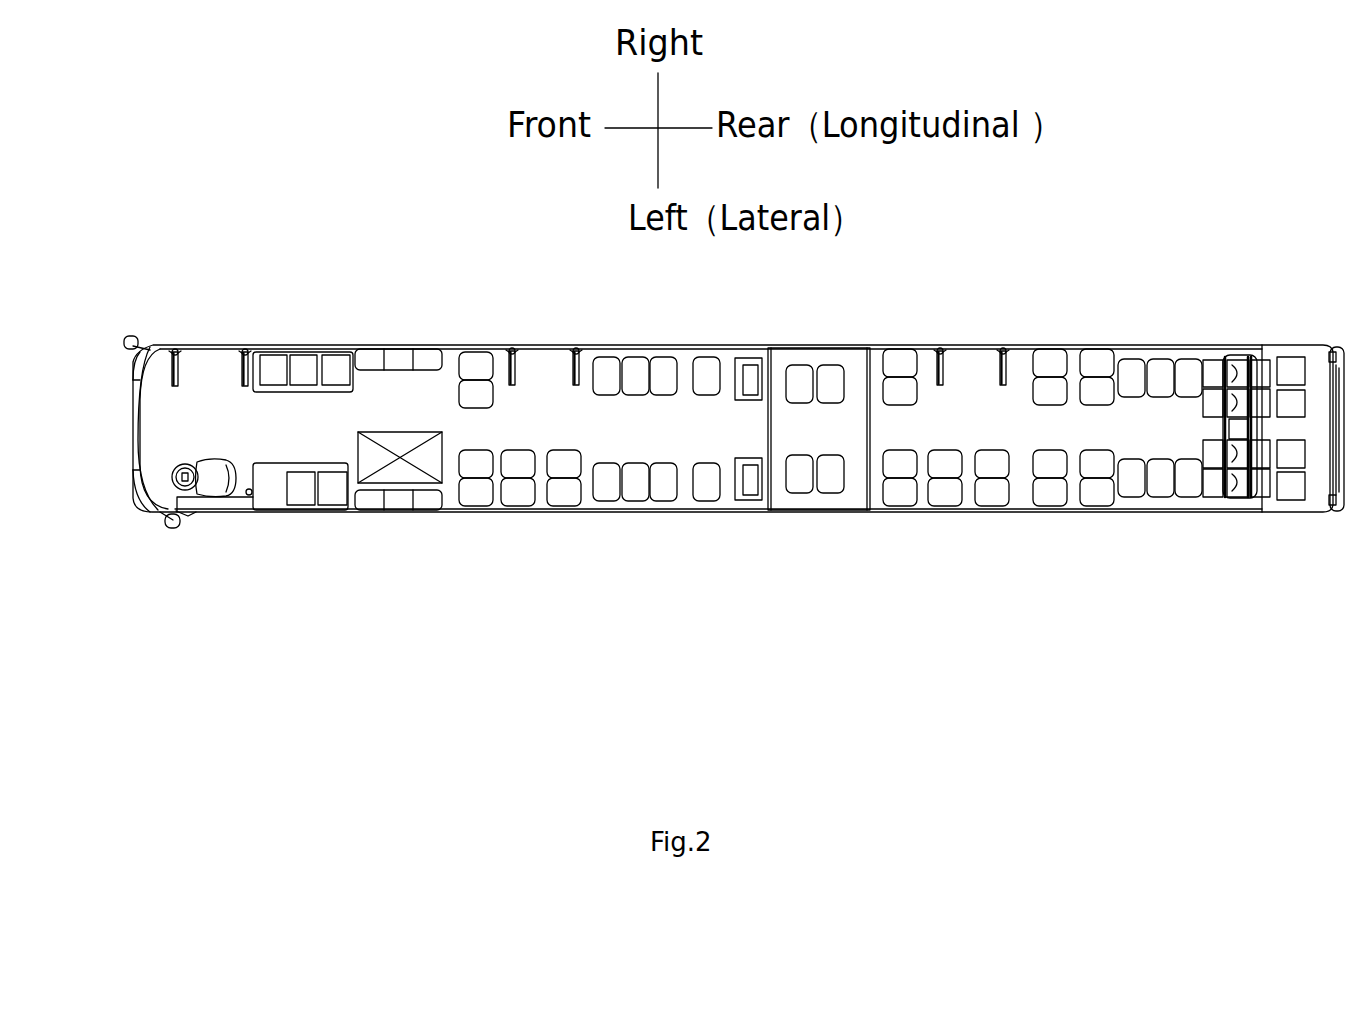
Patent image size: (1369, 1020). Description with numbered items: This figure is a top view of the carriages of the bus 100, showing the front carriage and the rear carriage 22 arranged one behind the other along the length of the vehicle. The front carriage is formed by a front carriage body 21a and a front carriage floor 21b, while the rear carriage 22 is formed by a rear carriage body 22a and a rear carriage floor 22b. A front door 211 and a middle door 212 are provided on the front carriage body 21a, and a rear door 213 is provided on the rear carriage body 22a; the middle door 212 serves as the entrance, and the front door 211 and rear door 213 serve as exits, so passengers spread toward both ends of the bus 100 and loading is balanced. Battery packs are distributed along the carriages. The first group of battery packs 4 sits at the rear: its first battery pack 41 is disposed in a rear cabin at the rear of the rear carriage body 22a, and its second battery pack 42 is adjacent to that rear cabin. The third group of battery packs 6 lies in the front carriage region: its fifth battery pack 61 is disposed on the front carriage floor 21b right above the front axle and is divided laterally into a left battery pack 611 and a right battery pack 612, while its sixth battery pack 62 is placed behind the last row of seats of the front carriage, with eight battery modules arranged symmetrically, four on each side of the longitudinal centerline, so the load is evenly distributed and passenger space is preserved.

The bus 100 is at (360, 230).
The front door 211 is at (250, 347).
The front carriage body 21a is at (398, 347).
The middle door 212 is at (515, 347).
The rear door 213 is at (948, 347).
The rear carriage 22 is at (705, 415).
The rear carriage body 22a is at (1082, 347).
The rear carriage floor 22b is at (1008, 437).
The front carriage floor 21b is at (177, 448).
The first group of battery packs 4 is at (1225, 203).
The first battery pack 41 is at (1287, 345).
The second battery pack 42 is at (1210, 345).
The third group of battery packs 6 is at (500, 598).
The fifth battery pack 61 is at (405, 588).
The left battery pack 611 is at (305, 493).
The right battery pack 612 is at (273, 370).
The sixth battery pack 62 is at (745, 490).